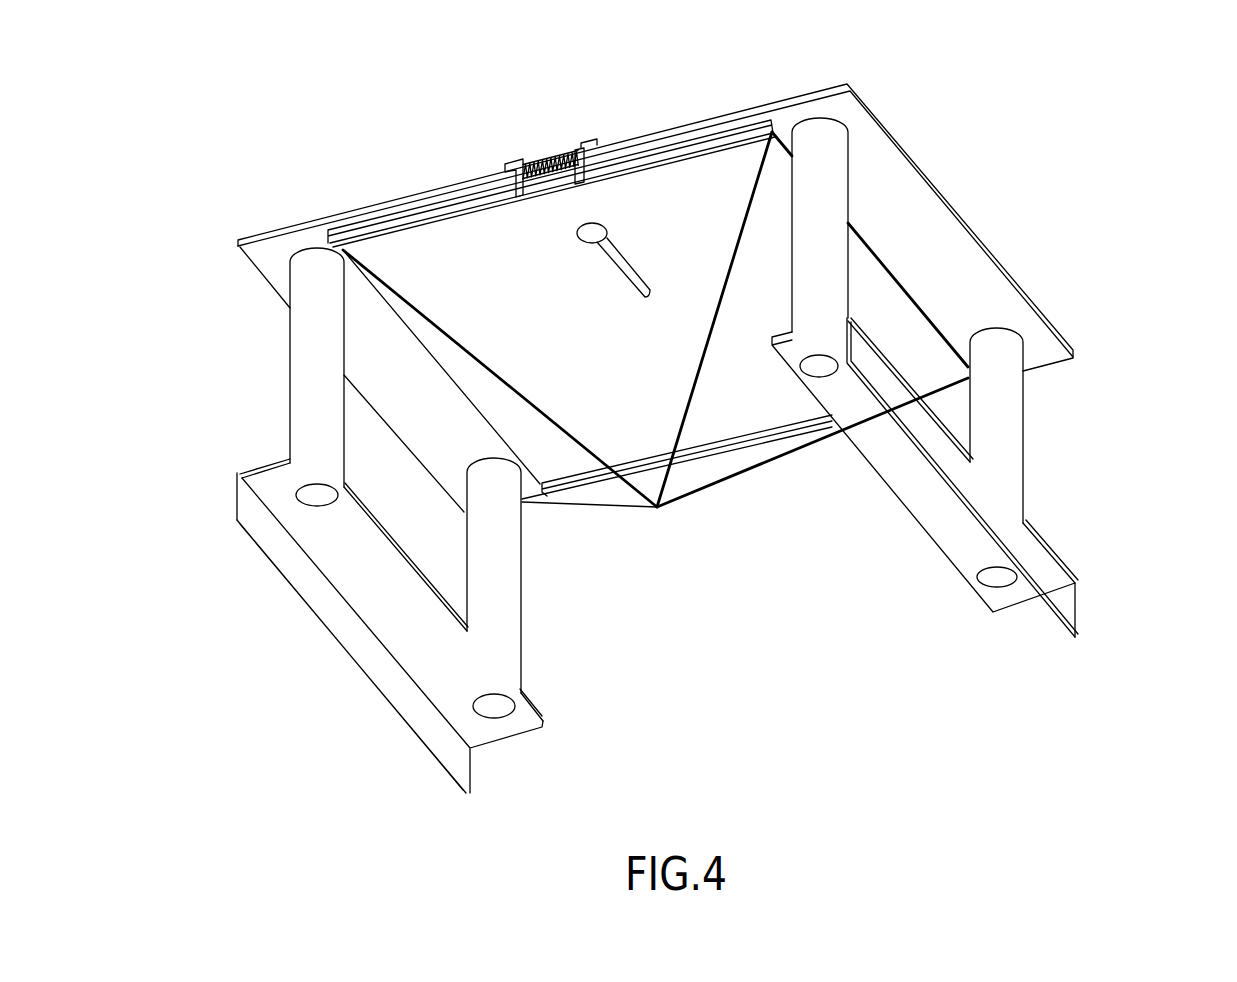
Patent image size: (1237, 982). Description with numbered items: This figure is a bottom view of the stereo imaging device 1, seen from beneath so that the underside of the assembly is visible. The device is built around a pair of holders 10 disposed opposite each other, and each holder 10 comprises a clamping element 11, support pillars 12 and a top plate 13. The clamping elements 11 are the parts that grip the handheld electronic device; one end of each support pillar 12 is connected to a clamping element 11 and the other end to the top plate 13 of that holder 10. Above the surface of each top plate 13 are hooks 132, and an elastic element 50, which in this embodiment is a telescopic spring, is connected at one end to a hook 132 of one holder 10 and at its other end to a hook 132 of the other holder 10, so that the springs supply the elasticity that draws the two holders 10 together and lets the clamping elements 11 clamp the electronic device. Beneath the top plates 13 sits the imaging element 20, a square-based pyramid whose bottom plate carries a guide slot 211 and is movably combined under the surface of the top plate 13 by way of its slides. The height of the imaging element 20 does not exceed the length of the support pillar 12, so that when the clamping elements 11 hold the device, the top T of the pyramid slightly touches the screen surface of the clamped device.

The stereo imaging device 1 is at (703, 426).
The holder 10 is at (703, 438).
The clamping element 11 is at (238, 490).
The support pillar 12 is at (297, 399).
The top plate 13 is at (1033, 322).
The hook 132 is at (512, 164).
The imaging element 20 is at (655, 377).
The guide slot 211 is at (632, 250).
The elastic element 50 is at (547, 160).
The top of the square-based pyramid T is at (657, 508).